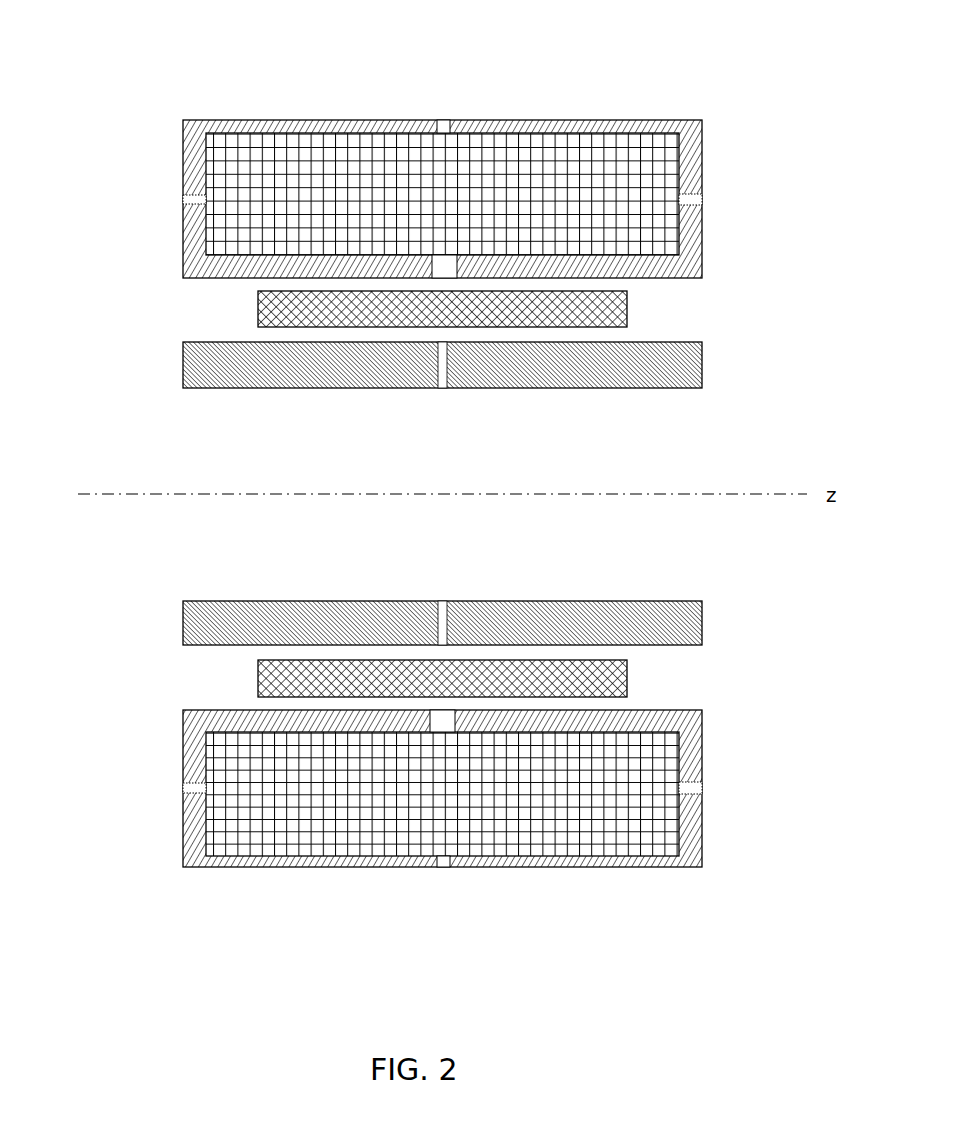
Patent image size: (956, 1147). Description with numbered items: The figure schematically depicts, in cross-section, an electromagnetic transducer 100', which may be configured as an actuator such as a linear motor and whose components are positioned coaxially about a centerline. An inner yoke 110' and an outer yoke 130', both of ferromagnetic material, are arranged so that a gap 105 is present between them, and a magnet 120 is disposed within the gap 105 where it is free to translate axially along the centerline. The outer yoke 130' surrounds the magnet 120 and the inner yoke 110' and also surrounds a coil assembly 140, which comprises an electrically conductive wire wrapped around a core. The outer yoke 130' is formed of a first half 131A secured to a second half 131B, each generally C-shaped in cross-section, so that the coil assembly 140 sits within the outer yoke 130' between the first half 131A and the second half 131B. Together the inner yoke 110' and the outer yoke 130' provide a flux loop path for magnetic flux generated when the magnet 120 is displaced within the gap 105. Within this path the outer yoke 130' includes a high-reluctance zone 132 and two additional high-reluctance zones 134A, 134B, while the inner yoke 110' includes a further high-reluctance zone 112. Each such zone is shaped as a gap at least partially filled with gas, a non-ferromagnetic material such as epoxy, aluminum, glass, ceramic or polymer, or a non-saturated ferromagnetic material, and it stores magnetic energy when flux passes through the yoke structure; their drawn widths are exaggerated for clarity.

The electromagnetic transducer 100' is at (443, 487).
The gap 105 is at (184, 306).
The inner yoke 110' is at (499, 489).
The high-reluctance zone 112 is at (443, 388).
The magnet 120 is at (627, 305).
The outer yoke 130' is at (448, 491).
The first half 131A is at (183, 150).
The second half 131B is at (702, 122).
The high-reluctance zone 132 is at (440, 118).
The high-reluctance zone 134A is at (183, 198).
The high-reluctance zone 134B is at (702, 199).
The coil assembly 140 is at (560, 145).